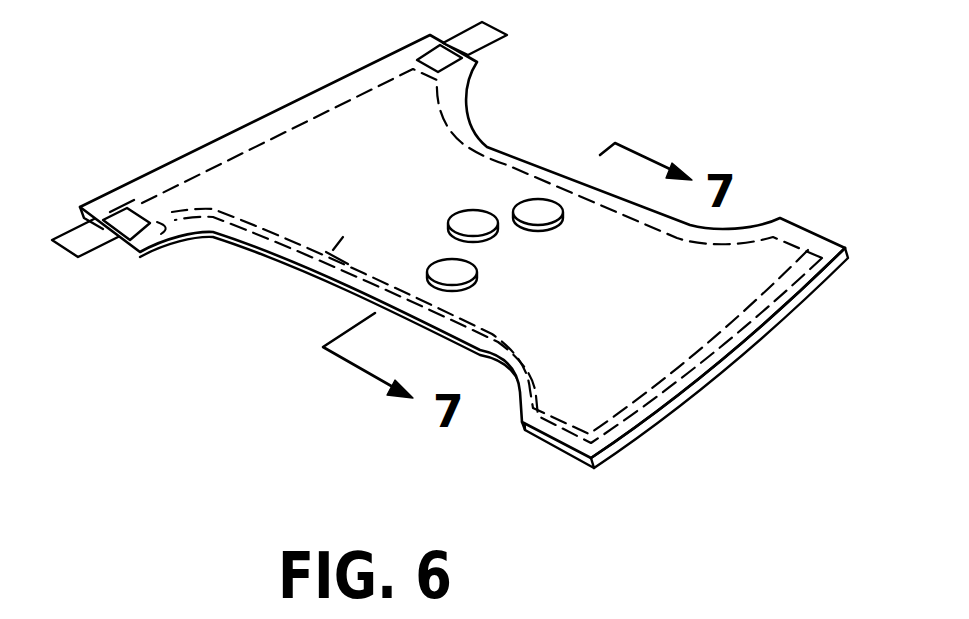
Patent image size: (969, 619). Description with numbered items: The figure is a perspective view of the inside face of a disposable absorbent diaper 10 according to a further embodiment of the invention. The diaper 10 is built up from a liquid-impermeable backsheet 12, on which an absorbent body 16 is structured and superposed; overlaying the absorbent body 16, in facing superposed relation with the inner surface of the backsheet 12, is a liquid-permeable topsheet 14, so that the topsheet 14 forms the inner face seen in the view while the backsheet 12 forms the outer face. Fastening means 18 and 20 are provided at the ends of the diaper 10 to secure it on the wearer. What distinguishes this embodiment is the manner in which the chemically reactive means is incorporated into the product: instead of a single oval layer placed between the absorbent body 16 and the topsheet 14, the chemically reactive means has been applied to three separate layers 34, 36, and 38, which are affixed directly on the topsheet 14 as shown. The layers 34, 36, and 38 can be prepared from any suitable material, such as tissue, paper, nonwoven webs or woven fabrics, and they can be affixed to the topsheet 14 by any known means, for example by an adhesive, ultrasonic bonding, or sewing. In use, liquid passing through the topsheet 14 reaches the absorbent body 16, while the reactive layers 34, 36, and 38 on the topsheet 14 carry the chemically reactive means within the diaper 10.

The diaper 10 is at (718, 398).
The liquid-impermeable backsheet 12 is at (637, 437).
The liquid-permeable topsheet 14 is at (263, 117).
The absorbent body 16 is at (290, 266).
The fastening means 18 is at (88, 252).
The fastening means 20 is at (493, 48).
The layer 34 is at (541, 199).
The layer 36 is at (476, 208).
The layer 38 is at (430, 258).